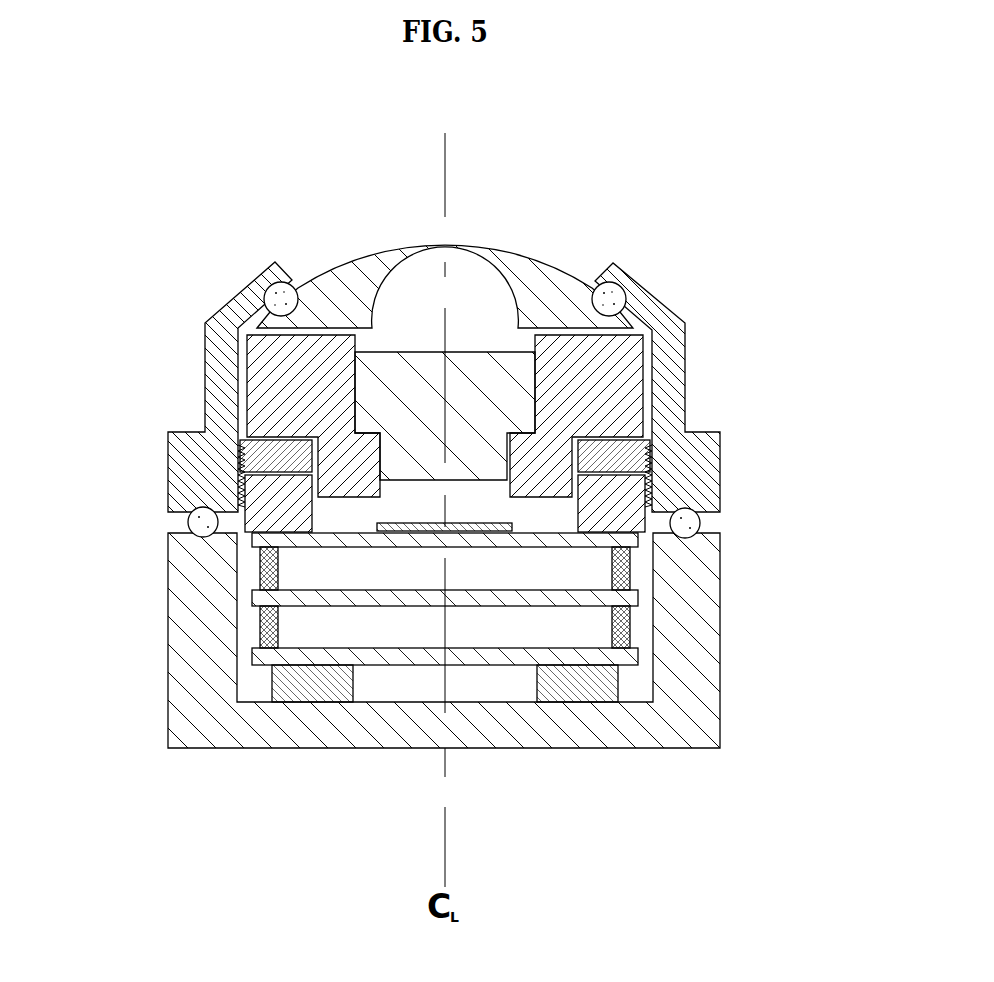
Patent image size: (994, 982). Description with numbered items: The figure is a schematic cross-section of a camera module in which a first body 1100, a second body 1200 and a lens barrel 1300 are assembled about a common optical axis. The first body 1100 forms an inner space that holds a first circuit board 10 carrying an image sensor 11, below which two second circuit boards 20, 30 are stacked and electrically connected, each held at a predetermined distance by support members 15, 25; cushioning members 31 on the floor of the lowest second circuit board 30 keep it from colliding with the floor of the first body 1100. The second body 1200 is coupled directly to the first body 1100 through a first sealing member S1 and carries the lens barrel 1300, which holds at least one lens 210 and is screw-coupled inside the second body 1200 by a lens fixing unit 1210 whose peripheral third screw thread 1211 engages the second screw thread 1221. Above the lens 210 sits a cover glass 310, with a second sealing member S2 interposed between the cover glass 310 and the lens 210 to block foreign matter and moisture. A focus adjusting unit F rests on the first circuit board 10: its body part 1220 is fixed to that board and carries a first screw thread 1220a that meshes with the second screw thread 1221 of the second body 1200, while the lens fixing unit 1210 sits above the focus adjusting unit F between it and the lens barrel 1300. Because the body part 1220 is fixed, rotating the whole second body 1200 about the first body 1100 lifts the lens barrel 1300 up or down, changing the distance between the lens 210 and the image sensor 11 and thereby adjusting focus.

The cover glass 310 is at (488, 262).
The lens 210 is at (478, 370).
The second sealing member S2 is at (617, 293).
The lens barrel 1300 is at (630, 375).
The image sensor 11 is at (507, 525).
The second body 1200 is at (700, 440).
The lens fixing unit 1210 is at (262, 447).
The third screw thread 1211 is at (240, 446).
The body part 1220 is at (240, 468).
The first screw thread 1220a is at (262, 482).
The second screw thread 1221 is at (240, 500).
The focus adjusting unit F is at (52, 437).
The first sealing member S1 is at (698, 513).
The first circuit board 10 is at (252, 542).
The support member 15 is at (625, 565).
The second circuit board 20 is at (252, 598).
The support member 25 is at (625, 623).
The second circuit board 30 is at (252, 662).
The cushioning member 31 is at (305, 688).
The first body 1100 is at (690, 737).